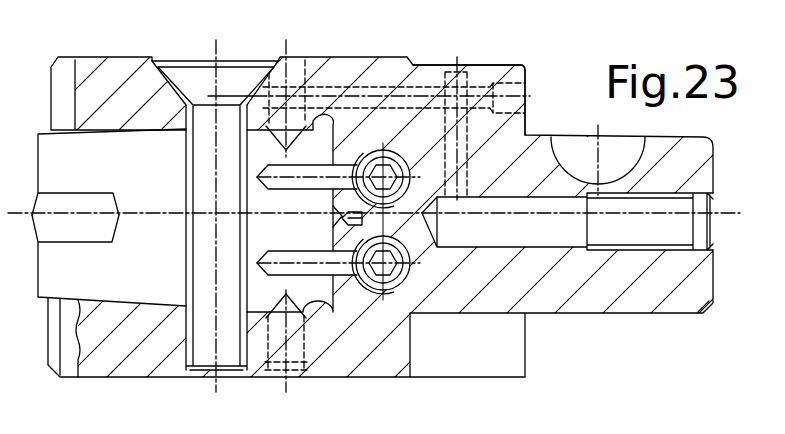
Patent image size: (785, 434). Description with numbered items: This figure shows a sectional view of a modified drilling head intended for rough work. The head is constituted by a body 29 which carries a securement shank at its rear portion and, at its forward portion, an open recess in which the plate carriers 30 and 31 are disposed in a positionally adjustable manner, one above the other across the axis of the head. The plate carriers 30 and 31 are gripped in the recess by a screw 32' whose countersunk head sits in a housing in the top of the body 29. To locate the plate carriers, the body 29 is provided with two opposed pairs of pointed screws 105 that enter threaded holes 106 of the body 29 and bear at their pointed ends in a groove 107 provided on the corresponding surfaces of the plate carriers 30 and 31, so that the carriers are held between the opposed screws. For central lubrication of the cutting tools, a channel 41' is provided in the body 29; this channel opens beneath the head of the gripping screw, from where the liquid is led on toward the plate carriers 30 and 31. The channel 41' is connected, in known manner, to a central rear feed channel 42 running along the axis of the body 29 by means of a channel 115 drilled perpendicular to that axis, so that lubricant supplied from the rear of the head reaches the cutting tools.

The body 29 is at (505, 72).
The plate carrier 30 is at (98, 277).
The plate carrier 31 is at (98, 177).
The countersunk screw 32' is at (216, 205).
The channel 41' is at (369, 69).
The central rear feed channel 42 is at (557, 235).
The pointed screw 105 is at (268, 367).
The threaded hole 106 is at (305, 345).
The groove 107 is at (272, 304).
The channel 115 is at (558, 100).